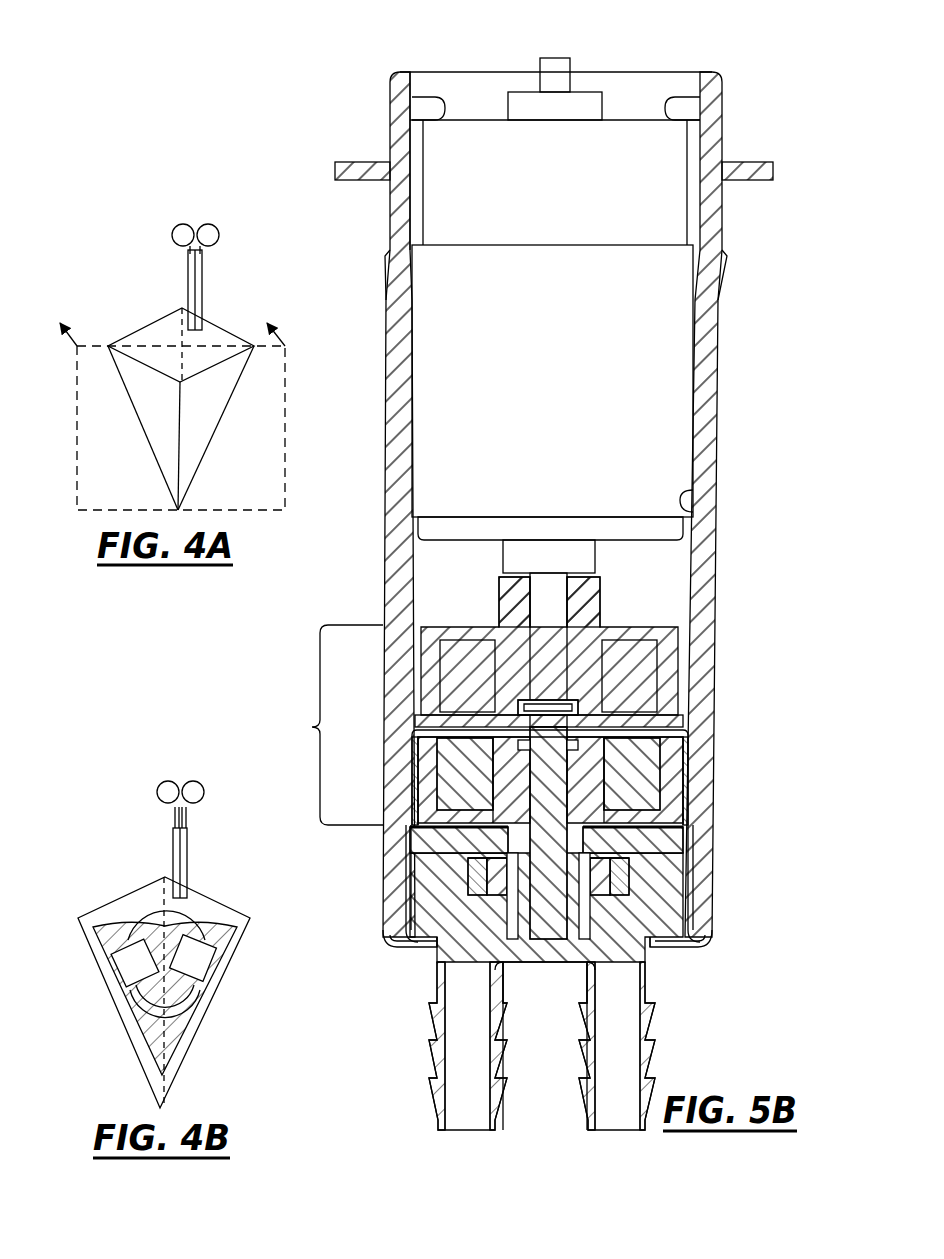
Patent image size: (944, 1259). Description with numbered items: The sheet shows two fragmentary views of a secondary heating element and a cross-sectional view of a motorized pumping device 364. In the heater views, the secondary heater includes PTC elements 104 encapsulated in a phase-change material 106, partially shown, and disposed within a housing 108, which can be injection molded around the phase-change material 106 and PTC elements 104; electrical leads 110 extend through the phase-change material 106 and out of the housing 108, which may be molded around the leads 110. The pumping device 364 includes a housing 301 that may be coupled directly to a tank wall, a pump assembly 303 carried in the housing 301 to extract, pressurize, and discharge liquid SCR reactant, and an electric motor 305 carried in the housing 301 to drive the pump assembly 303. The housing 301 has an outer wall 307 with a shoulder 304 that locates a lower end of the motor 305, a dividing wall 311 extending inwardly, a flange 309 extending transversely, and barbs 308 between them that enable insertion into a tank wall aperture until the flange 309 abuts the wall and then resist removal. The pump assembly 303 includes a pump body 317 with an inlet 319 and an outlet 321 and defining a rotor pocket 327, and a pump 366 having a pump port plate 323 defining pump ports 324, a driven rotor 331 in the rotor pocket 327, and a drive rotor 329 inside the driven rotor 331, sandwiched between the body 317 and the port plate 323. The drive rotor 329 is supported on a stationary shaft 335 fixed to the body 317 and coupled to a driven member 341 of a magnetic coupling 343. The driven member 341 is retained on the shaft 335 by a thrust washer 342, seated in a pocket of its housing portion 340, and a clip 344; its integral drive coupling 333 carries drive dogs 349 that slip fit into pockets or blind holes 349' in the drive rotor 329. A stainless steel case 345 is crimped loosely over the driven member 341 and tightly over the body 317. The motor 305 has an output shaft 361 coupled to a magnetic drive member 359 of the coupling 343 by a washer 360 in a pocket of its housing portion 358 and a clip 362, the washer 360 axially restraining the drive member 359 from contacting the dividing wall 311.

In FIG. 4B, the PTC elements 104 is at (128, 972).
In FIG. 4B, the phase-change material 106 is at (225, 945).
In FIG. 4A, the housing 108 is at (213, 422).
In FIG. 4A, the electrical leads 110 is at (210, 288).
In FIG. 4B, the electrical leads 110 is at (133, 847).
In FIG. 5B, the housing 301 is at (543, 473).
In FIG. 5B, the pump assembly 303 is at (514, 1046).
In FIG. 5B, the shoulder 304 is at (690, 495).
In FIG. 5B, the electric motor 305 is at (680, 345).
In FIG. 5B, the outer wall 307 is at (393, 382).
In FIG. 5B, the barbs 308 is at (390, 262).
In FIG. 5B, the flange 309 is at (345, 165).
In FIG. 5B, the dividing wall 311 is at (640, 720).
In FIG. 5B, the pump body 317 is at (660, 950).
In FIG. 5B, the inlet 319 is at (455, 1050).
In FIG. 5B, the outlet 321 is at (630, 1075).
In FIG. 5B, the pump port plate 323 is at (435, 855).
In FIG. 5B, the pump ports 324 is at (470, 865).
In FIG. 5B, the rotor pocket 327 is at (620, 888).
In FIG. 5B, the drive rotor 329 is at (600, 858).
In FIG. 5B, the driven rotor 331 is at (610, 877).
In FIG. 5B, the integral drive coupling 333 is at (510, 842).
In FIG. 5B, the stationary shaft 335 is at (555, 900).
In FIG. 5B, the housing portion 340 is at (665, 748).
In FIG. 5B, the driven member 341 is at (415, 780).
In FIG. 5B, the thrust washer 342 is at (670, 778).
In FIG. 5B, the magnetic coupling 343 is at (325, 725).
In FIG. 5B, the clip 344 is at (578, 750).
In FIG. 5B, the case 345 is at (692, 922).
In FIG. 5B, the drive dogs 349 is at (527, 927).
In FIG. 5B, the pockets or blind holes 349' is at (660, 939).
In FIG. 5B, the housing portion 358 is at (665, 632).
In FIG. 5B, the magnetic drive member 359 is at (650, 608).
In FIG. 5B, the washer 360 is at (430, 653).
In FIG. 5B, the output shaft 361 is at (540, 598).
In FIG. 5B, the clip 362 is at (555, 703).
In FIG. 5B, the motorized pumping device 364 is at (540, 565).
In FIG. 5B, the pump 366 is at (430, 943).